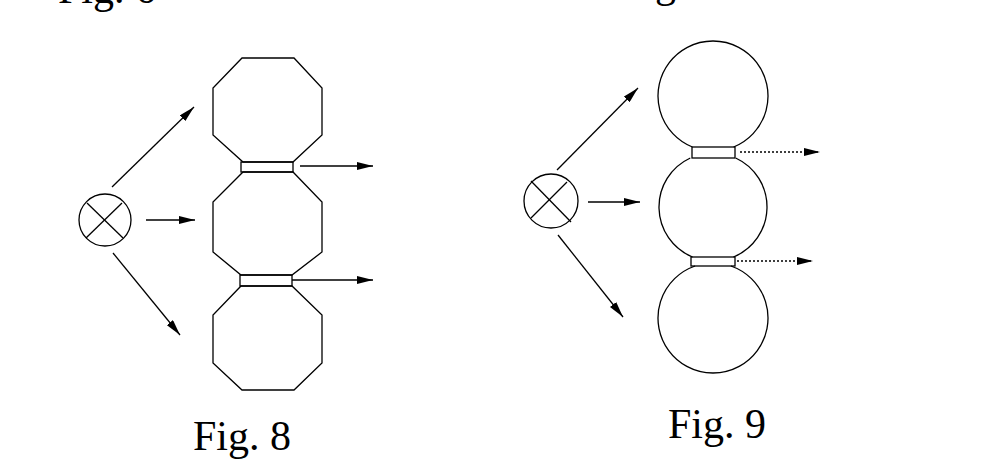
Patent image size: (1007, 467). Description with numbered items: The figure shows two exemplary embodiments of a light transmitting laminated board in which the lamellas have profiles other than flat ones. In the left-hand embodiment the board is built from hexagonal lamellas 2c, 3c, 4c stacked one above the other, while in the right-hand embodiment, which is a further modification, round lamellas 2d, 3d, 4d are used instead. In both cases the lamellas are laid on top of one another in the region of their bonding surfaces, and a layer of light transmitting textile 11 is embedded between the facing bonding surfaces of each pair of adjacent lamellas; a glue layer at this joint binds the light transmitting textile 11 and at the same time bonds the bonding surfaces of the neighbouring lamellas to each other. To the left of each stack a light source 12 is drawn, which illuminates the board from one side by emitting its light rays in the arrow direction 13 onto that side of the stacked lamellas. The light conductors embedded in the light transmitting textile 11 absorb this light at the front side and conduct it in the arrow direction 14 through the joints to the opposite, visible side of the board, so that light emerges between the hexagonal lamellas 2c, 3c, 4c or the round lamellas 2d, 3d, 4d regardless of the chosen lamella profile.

In FIG. 8, the hexagonal lamella 2c is at (273, 88).
In FIG. 8, the hexagonal lamella 3c is at (285, 245).
In FIG. 8, the hexagonal lamella 4c is at (263, 345).
In FIG. 9, the round lamella 2d is at (725, 85).
In FIG. 9, the round lamella 3d is at (728, 225).
In FIG. 9, the round lamella 4d is at (720, 325).
In FIG. 8, the light transmitting textile 11 is at (293, 163).
In FIG. 9, the light transmitting textile 11 is at (717, 152).
In FIG. 8, the arrow direction 14 is at (328, 282).
In FIG. 9, the arrow direction 14 is at (763, 263).
In FIG. 8, the light source 12 is at (92, 218).
In FIG. 9, the light source 12 is at (535, 200).
In FIG. 8, the arrow direction 13 is at (137, 285).
In FIG. 9, the arrow direction 13 is at (580, 268).